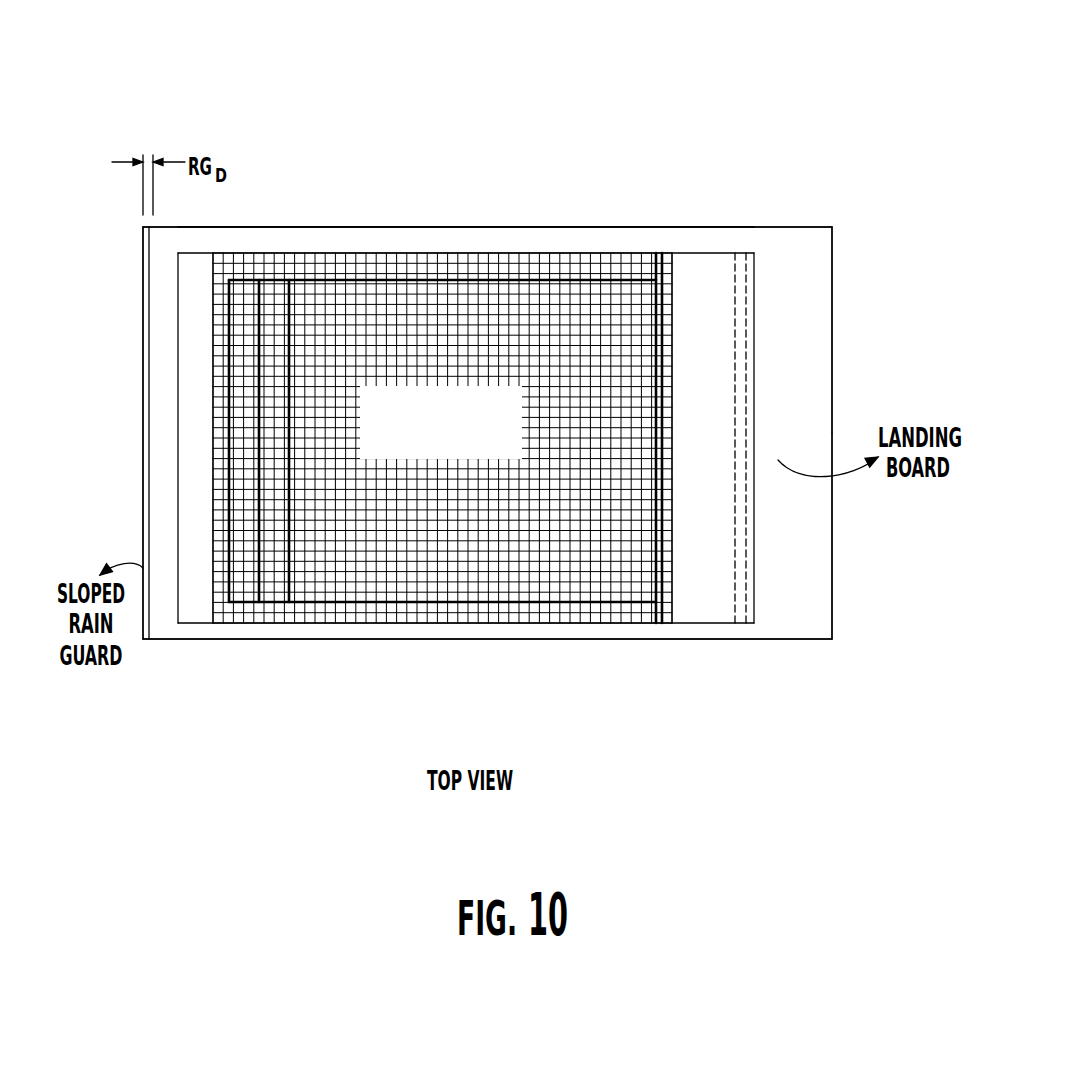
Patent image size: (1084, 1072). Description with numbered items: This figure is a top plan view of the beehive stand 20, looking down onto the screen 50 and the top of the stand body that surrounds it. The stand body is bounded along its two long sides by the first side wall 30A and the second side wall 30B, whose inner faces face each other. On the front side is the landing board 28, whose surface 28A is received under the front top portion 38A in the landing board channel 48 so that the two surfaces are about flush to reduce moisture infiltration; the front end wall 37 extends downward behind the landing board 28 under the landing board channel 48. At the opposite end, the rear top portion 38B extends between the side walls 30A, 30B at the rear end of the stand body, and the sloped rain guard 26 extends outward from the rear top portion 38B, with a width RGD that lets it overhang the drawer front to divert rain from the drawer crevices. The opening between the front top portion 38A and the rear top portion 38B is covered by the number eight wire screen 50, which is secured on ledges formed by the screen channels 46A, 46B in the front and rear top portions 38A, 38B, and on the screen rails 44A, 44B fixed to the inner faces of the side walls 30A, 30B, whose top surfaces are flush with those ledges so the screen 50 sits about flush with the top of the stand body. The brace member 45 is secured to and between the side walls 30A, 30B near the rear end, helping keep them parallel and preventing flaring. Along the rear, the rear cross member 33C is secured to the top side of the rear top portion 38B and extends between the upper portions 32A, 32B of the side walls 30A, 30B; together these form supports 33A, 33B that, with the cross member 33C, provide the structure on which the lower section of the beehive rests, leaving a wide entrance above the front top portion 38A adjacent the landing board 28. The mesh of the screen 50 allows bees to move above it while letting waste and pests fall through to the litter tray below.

The beehive stand 20 is at (722, 206).
The rain guard 26 is at (143, 452).
The landing board 28 is at (795, 350).
The surface of the landing board 28A is at (795, 553).
The first side wall 30A is at (402, 226).
The second side wall 30B is at (320, 643).
The upper portion of the first side wall 32A is at (557, 227).
The upper portion of the second side wall 32B is at (668, 629).
The support 33A is at (495, 242).
The support 33B is at (465, 630).
The rear cross member 33C is at (167, 392).
The front end wall 37 is at (735, 330).
The front top portion 38A is at (713, 310).
The rear top portion 38B is at (195, 293).
The screen rail 44A is at (307, 265).
The screen rail 44B is at (585, 612).
The brace member 45 is at (273, 323).
The screen channel 46A is at (657, 308).
The screen channel 46B is at (219, 338).
The landing board channel 48 is at (746, 265).
The screen 50 is at (582, 330).